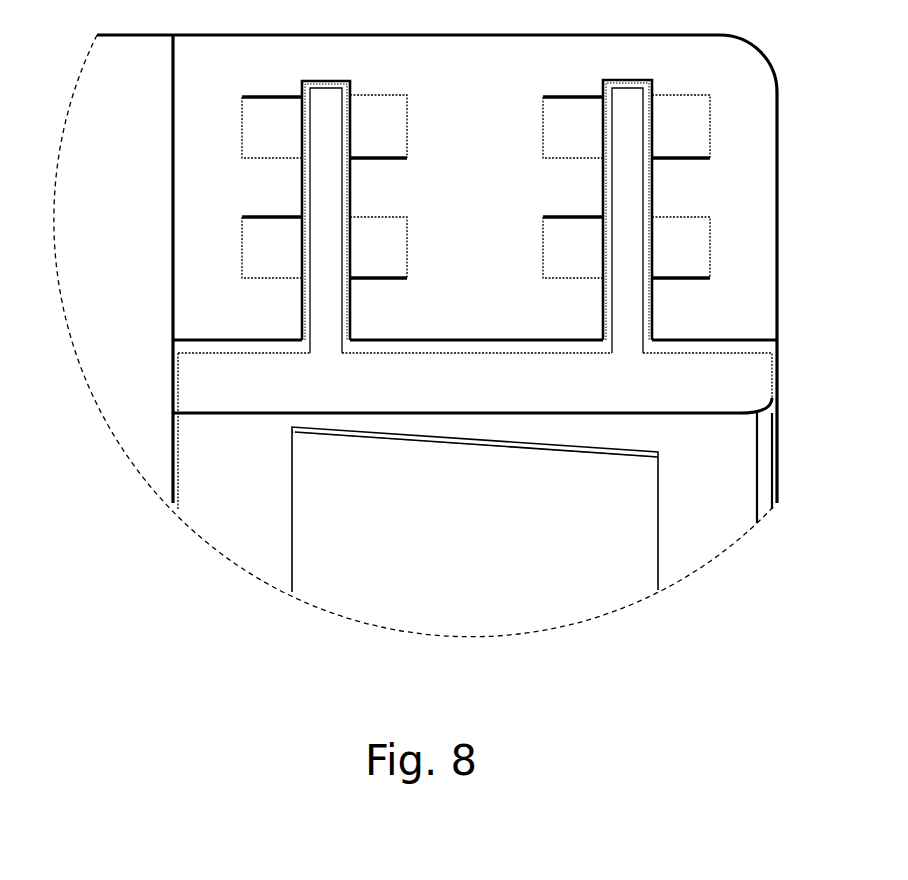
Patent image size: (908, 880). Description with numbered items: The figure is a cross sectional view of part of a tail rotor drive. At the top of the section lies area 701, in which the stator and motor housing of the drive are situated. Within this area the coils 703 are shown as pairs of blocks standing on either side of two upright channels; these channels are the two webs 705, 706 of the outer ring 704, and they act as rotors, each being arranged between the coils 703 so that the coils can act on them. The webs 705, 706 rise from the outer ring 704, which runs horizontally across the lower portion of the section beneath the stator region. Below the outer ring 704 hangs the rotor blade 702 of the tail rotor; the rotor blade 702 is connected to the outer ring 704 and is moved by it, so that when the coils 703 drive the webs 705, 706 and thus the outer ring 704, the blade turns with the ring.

The stator and motor housing area 701 is at (752, 172).
The rotor blade 702 is at (507, 541).
The coils 703 is at (262, 134).
The outer ring 704 is at (712, 382).
The web (rotor) 705 is at (330, 296).
The web (rotor) 706 is at (625, 312).